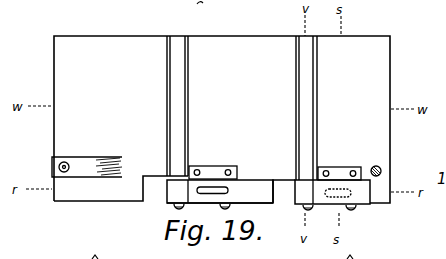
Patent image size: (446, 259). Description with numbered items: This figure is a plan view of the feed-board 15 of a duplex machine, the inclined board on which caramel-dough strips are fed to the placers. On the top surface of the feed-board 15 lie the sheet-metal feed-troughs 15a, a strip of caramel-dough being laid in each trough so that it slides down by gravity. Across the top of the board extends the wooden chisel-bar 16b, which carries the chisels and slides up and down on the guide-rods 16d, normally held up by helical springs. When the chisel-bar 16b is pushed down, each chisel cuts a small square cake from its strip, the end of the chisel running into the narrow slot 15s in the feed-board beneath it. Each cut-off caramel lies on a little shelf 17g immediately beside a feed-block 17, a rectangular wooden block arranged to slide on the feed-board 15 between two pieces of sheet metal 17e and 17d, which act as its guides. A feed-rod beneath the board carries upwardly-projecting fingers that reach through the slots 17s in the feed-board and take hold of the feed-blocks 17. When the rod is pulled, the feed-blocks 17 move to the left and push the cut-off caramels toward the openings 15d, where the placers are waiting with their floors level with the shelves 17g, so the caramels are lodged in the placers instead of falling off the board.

The feed-board 15 is at (222, 119).
The feed-trough 15a is at (303, 73).
The opening 15d is at (155, 184).
The slot 15s is at (308, 180).
The chisel-bar 16b is at (93, 170).
The guide-rod 16d is at (66, 162).
The feed-block 17 is at (270, 192).
The guide 17d is at (210, 172).
The guide 17e is at (167, 205).
The shelf 17g is at (245, 192).
The slot 17s is at (228, 190).